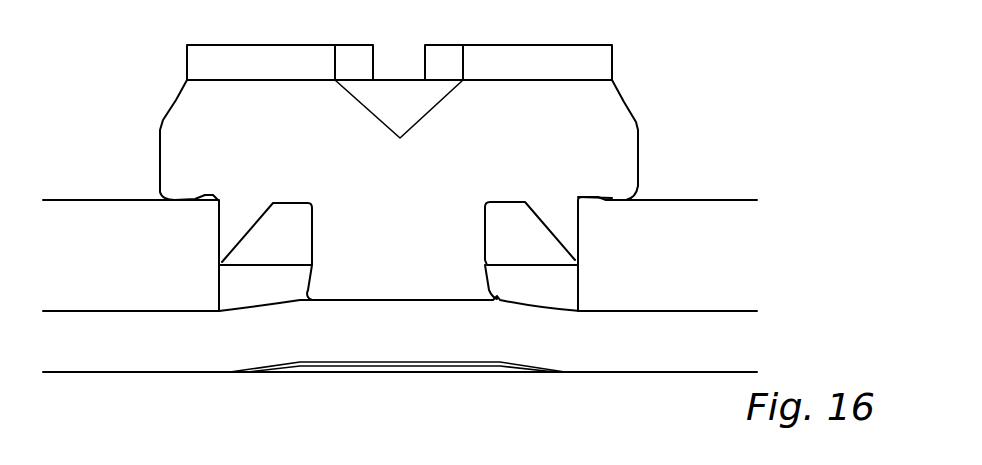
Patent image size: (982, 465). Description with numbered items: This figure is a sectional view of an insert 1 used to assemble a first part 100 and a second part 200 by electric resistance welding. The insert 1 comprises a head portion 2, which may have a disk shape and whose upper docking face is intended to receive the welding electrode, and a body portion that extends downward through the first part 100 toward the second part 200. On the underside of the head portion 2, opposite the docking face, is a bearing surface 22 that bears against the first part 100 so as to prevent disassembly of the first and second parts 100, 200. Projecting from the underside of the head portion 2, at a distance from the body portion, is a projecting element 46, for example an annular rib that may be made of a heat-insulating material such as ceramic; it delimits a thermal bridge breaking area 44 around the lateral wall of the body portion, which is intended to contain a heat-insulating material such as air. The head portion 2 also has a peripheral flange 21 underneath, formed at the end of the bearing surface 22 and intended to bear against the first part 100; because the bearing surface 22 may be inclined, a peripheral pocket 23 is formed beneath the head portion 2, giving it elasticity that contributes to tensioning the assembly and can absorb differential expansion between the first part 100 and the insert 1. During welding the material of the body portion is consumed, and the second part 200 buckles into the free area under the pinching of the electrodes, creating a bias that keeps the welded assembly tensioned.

The insert 1 is at (645, 88).
The head portion 2 is at (543, 96).
The peripheral flange 21 is at (631, 201).
The bearing surface 22 is at (614, 203).
The peripheral pocket 23 is at (586, 196).
The thermal bridge breaking area 44 is at (287, 242).
The projecting element 46 is at (230, 237).
The first part 100 is at (713, 220).
The second part 200 is at (670, 358).